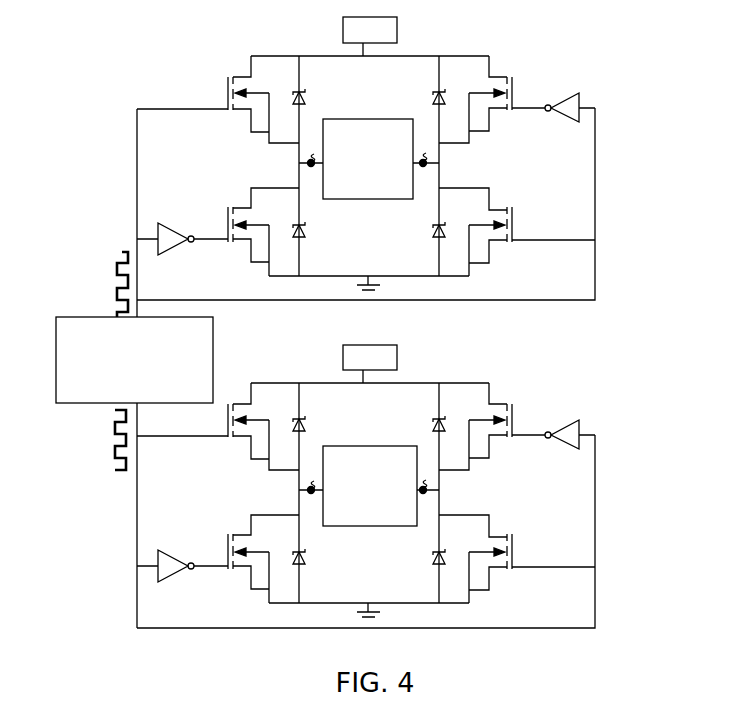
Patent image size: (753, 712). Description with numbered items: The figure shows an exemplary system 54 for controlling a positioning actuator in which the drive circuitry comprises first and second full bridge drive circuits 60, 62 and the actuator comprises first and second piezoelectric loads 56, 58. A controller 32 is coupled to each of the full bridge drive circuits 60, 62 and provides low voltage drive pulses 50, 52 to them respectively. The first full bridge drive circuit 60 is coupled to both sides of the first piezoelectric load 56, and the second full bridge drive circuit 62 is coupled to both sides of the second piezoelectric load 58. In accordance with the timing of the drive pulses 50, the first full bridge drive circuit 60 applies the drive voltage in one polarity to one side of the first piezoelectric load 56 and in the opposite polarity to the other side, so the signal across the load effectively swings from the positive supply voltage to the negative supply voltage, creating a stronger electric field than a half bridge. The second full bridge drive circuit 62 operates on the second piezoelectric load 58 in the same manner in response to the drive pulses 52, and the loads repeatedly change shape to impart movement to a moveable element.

The controller 32 is at (55, 362).
The drive pulses 50 is at (117, 290).
The drive pulses 52 is at (115, 427).
The system 54 is at (93, 100).
The first piezoelectric load 56 is at (362, 119).
The second piezoelectric load 58 is at (356, 446).
The first full bridge drive circuit 60 is at (602, 45).
The second full bridge drive circuit 62 is at (602, 372).